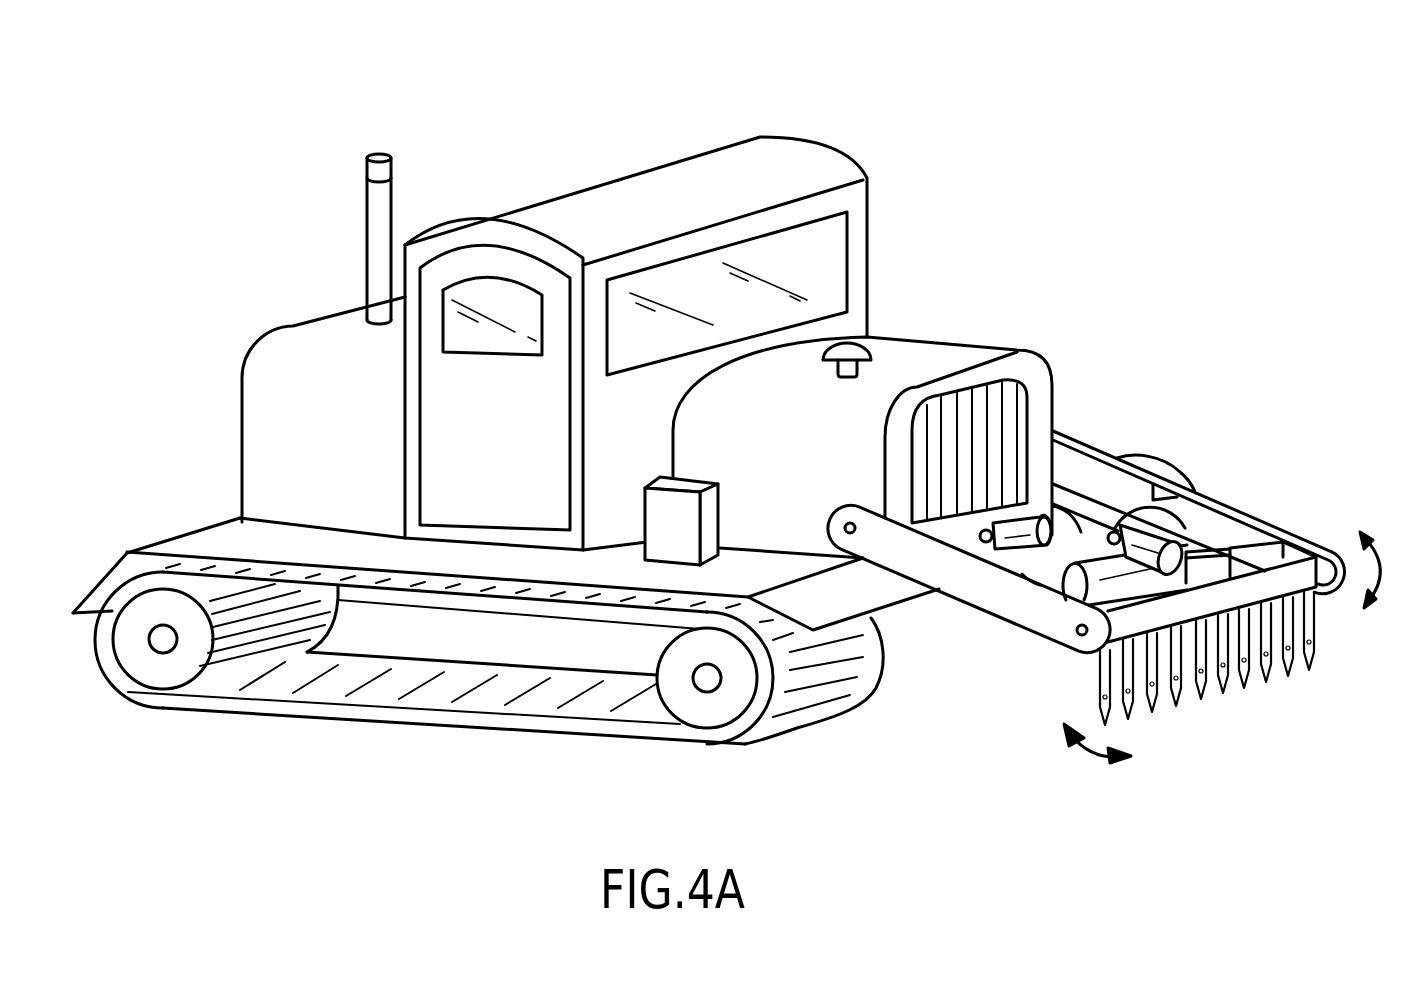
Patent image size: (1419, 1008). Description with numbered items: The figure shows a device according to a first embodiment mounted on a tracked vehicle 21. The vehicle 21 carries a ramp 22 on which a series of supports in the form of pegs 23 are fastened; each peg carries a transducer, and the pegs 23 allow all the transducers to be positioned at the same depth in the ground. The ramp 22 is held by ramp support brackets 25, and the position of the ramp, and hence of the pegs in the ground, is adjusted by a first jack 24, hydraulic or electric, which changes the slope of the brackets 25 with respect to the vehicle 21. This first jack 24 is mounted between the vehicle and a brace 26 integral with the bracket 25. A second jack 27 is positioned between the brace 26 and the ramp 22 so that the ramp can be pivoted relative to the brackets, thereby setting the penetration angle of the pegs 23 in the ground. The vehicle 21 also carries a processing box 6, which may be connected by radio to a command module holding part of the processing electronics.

The tracked vehicle 21 is at (543, 163).
The processing box 6 is at (668, 542).
The ramp 22 is at (1310, 592).
The pegs 23 is at (1313, 650).
The first jack 24 is at (1025, 520).
The ramp support brackets 25 is at (1272, 535).
The brace 26 is at (1037, 568).
The second jack 27 is at (1272, 535).